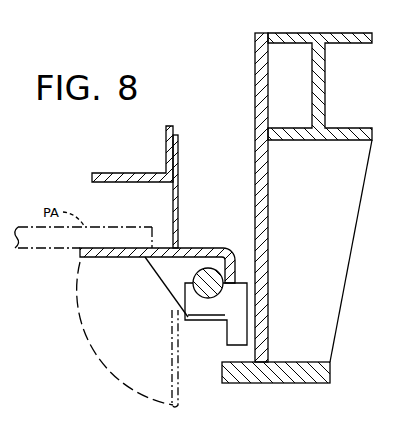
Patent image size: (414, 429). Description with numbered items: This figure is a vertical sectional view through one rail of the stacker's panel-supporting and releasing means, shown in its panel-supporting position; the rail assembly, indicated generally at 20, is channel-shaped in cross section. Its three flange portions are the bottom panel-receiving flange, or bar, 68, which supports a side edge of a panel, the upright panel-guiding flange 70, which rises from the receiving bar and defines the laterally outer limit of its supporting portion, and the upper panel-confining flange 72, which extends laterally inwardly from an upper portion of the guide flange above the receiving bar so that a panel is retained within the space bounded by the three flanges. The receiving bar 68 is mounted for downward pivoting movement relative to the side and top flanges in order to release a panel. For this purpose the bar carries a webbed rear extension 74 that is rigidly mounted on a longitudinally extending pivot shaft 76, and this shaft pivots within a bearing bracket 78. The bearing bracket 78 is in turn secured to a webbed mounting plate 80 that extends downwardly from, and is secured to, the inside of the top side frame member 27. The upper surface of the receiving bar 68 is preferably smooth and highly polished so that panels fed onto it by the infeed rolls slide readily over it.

The door assembly 20 is at (150, 221).
The top side frame member 27 is at (300, 33).
The bottom panel-receiving flange 68 is at (133, 257).
The upright panel-guiding flange 70 is at (178, 217).
The upper panel-confining flange 72 is at (145, 173).
The webbed rear extension 74 is at (217, 248).
The pivot shaft 76 is at (197, 275).
The bearing bracket 78 is at (227, 334).
The webbed mounting plate 80 is at (255, 140).